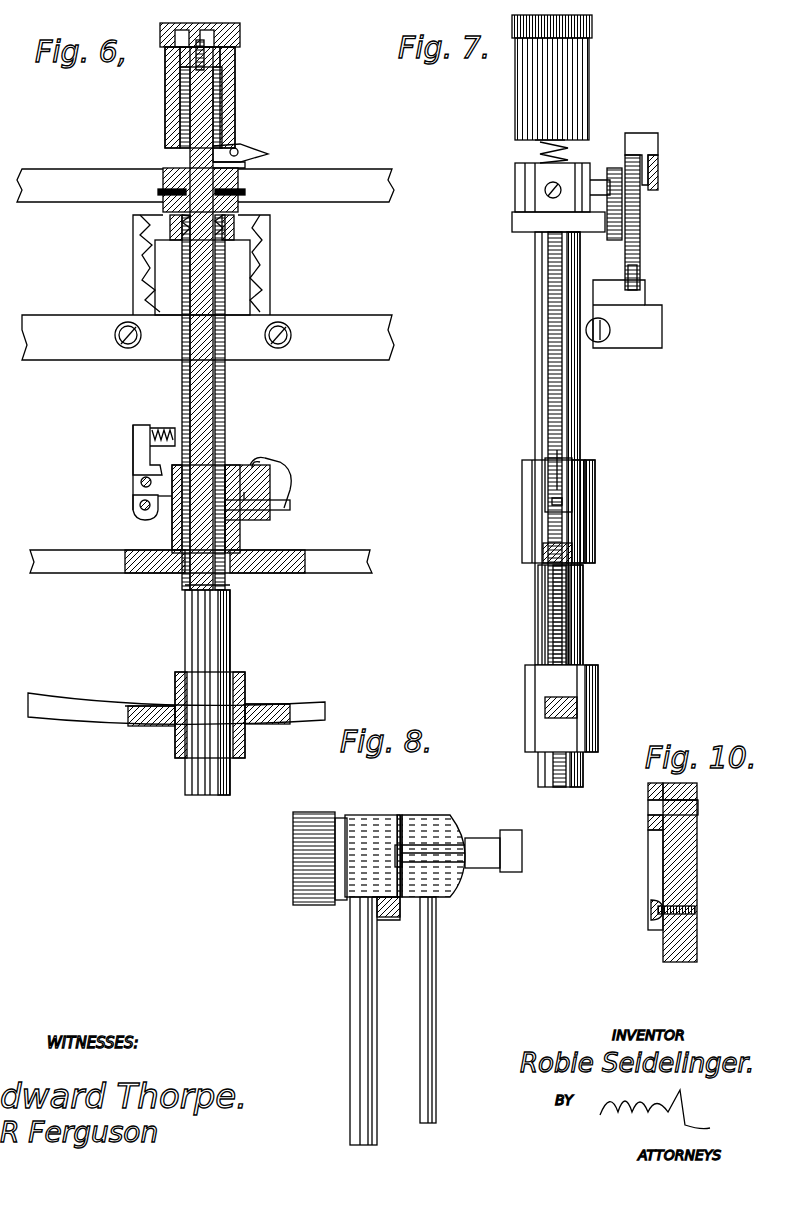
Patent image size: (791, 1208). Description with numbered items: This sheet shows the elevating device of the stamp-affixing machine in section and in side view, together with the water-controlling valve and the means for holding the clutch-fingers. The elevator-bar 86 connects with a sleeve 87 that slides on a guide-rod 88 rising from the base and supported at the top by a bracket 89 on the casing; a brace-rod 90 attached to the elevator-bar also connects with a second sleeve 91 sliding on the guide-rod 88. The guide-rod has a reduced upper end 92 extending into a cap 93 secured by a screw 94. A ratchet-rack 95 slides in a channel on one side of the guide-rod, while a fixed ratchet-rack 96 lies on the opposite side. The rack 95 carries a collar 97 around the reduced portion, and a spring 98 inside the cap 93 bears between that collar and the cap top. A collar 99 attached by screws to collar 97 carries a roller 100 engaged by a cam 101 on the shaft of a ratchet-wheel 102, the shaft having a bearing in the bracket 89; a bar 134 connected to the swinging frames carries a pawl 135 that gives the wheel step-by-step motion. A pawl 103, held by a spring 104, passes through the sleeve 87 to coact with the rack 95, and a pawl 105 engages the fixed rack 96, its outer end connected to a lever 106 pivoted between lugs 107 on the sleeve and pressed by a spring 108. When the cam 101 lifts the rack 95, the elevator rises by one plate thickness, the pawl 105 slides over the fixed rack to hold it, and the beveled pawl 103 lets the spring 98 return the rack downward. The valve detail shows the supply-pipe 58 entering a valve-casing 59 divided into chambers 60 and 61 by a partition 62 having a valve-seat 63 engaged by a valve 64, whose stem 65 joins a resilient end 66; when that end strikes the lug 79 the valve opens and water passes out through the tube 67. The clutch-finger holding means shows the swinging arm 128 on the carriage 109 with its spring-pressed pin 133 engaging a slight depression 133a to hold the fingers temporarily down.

In FIG. 6, the screw 94 is at (240, 30).
In FIG. 6, the cap 93 is at (235, 72).
In FIG. 7, the cap 93 is at (588, 90).
In FIG. 6, the reduced upper end 92 is at (203, 108).
In FIG. 6, the spring 98 is at (235, 118).
In FIG. 6, the pawl 135 is at (250, 148).
In FIG. 7, the pawl 135 is at (633, 130).
In FIG. 6, the collar 97 is at (245, 165).
In FIG. 6, the collar 99 is at (167, 176).
In FIG. 7, the collar 99 is at (518, 172).
In FIG. 6, the bar 134 is at (386, 162).
In FIG. 7, the bar 134 is at (660, 180).
In FIG. 6, the ratchet-wheel 102 is at (262, 212).
In FIG. 7, the ratchet-wheel 102 is at (641, 264).
In FIG. 6, the cam 101 is at (215, 240).
In FIG. 7, the cam 101 is at (641, 248).
In FIG. 6, the bracket 89 is at (345, 322).
In FIG. 7, the bracket 89 is at (600, 295).
In FIG. 6, the fixed ratchet-rack 96 is at (186, 383).
In FIG. 7, the fixed ratchet-rack 96 is at (550, 408).
In FIG. 6, the ratchet-rack 95 is at (225, 402).
In FIG. 6, the spring 108 is at (150, 430).
In FIG. 6, the lugs 107 is at (145, 464).
In FIG. 6, the lever 106 is at (135, 508).
In FIG. 7, the lever 106 is at (548, 473).
In FIG. 6, the pawl 105 is at (170, 510).
In FIG. 7, the pawl 105 is at (575, 490).
In FIG. 6, the sleeve 87 is at (245, 540).
In FIG. 7, the sleeve 87 is at (575, 522).
In FIG. 6, the spring 104 is at (290, 470).
In FIG. 6, the pawl 103 is at (292, 505).
In FIG. 6, the elevator-bar 86 is at (83, 545).
In FIG. 7, the elevator-bar 86 is at (543, 550).
In FIG. 6, the guide-rod 88 is at (230, 625).
In FIG. 7, the guide-rod 88 is at (583, 605).
In FIG. 6, the brace-rod 90 is at (118, 695).
In FIG. 7, the brace-rod 90 is at (545, 705).
In FIG. 6, the sleeve 91 is at (245, 745).
In FIG. 7, the sleeve 91 is at (598, 715).
In FIG. 7, the roller 100 is at (620, 145).
In FIG. 8, the chamber 60 is at (355, 812).
In FIG. 8, the valve-casing 59 is at (388, 800).
In FIG. 8, the partition 62 is at (400, 810).
In FIG. 8, the chamber 61 is at (432, 822).
In FIG. 8, the stem 65 is at (440, 848).
In FIG. 8, the end 66 is at (482, 846).
In FIG. 8, the lug 79 is at (528, 842).
In FIG. 8, the valve-seat 63 is at (465, 880).
In FIG. 8, the valve 64 is at (398, 862).
In FIG. 8, the supply-pipe 58 is at (358, 1028).
In FIG. 8, the tube 67 is at (436, 1003).
In FIG. 10, the carriage 109 is at (648, 790).
In FIG. 10, the swinging bar or arm 128 is at (690, 850).
In FIG. 10, the spring-pressed pin 133 is at (695, 910).
In FIG. 10, the depression 133a is at (651, 915).